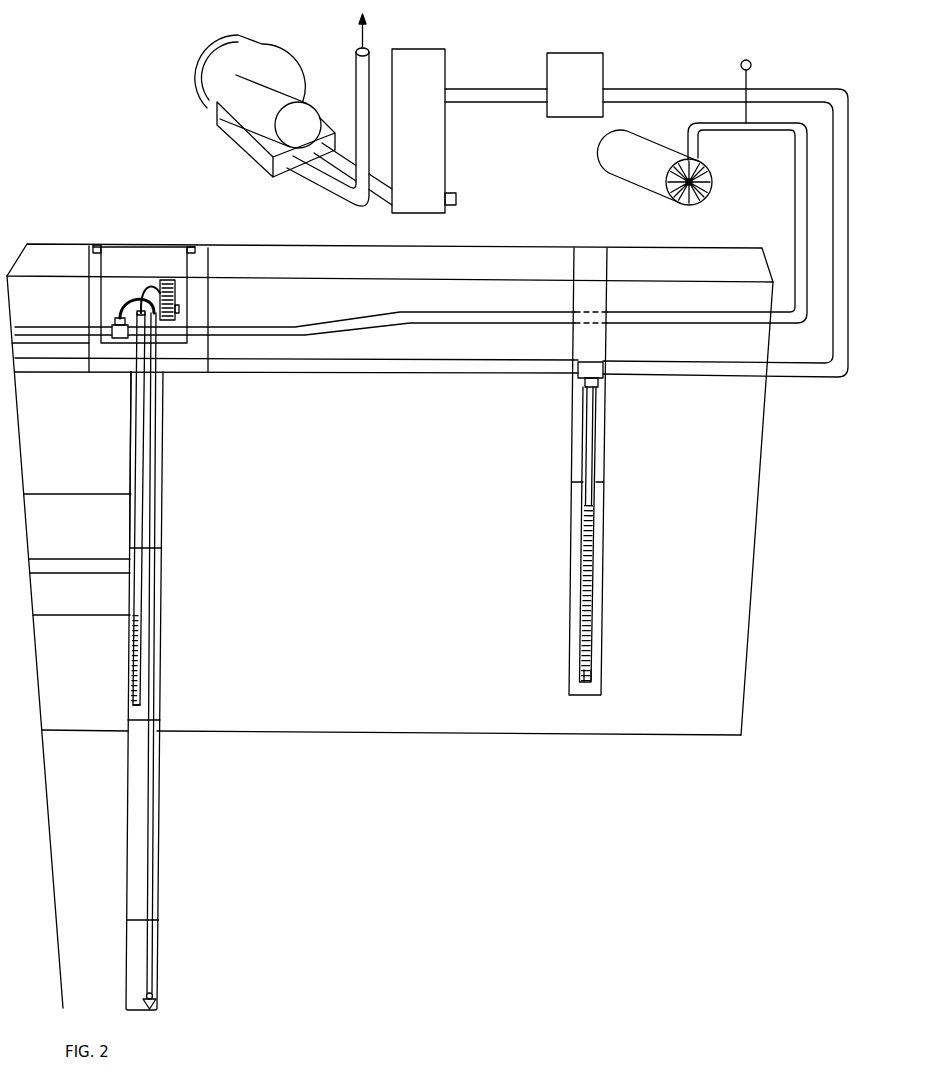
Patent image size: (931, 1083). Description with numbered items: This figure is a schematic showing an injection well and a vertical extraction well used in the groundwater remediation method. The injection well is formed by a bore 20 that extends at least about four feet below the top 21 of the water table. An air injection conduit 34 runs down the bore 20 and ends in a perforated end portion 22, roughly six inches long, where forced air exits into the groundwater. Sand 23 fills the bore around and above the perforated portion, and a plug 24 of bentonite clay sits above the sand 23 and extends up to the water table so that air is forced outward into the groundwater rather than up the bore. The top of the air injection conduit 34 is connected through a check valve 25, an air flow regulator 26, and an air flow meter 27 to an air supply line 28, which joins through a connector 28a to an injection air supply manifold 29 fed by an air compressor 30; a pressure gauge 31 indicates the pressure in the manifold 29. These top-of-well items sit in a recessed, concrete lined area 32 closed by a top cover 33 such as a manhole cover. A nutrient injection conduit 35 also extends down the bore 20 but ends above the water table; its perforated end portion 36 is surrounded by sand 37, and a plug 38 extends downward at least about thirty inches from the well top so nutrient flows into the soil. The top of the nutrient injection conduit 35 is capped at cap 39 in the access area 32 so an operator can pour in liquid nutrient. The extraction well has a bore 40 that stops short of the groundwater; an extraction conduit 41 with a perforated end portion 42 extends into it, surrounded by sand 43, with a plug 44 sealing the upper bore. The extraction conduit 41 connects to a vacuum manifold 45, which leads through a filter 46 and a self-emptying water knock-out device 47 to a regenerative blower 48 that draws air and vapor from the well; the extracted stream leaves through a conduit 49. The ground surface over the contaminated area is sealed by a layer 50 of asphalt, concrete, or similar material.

The bore 20 is at (162, 676).
The top of the water table 21 is at (368, 733).
The perforated end portion 22 is at (142, 983).
The sand 23 is at (135, 945).
The plug 24 is at (135, 810).
The check valve 25 is at (150, 284).
The air flow regulator 26 is at (178, 306).
The air flow meter 27 is at (170, 282).
The air supply line 28 is at (136, 301).
The connector 28a is at (119, 318).
The injection air supply manifold 29 is at (306, 328).
The air compressor 30 is at (637, 177).
The pressure gauge 31 is at (741, 66).
The recessed well top, concrete lined area 32 is at (99, 248).
The top cover 33 is at (108, 280).
The air injection conduit 34 is at (156, 470).
The nutrient injection conduit 35 is at (142, 410).
The end portion 36 is at (132, 645).
The sand 37 is at (135, 702).
The plug 38 is at (133, 460).
The cap 39 is at (138, 305).
The bore 40 is at (606, 470).
The extraction conduit 41 is at (590, 433).
The perforated end portion 42 is at (587, 649).
The sand 43 is at (597, 595).
The plug 44 is at (600, 438).
The vacuum manifold 45 is at (702, 372).
The filter 46 is at (557, 82).
The self-emptying water knock-out device 47 is at (437, 72).
The regenerative blower 48 is at (247, 140).
The conduit 49 is at (360, 92).
The layer 50 is at (330, 249).